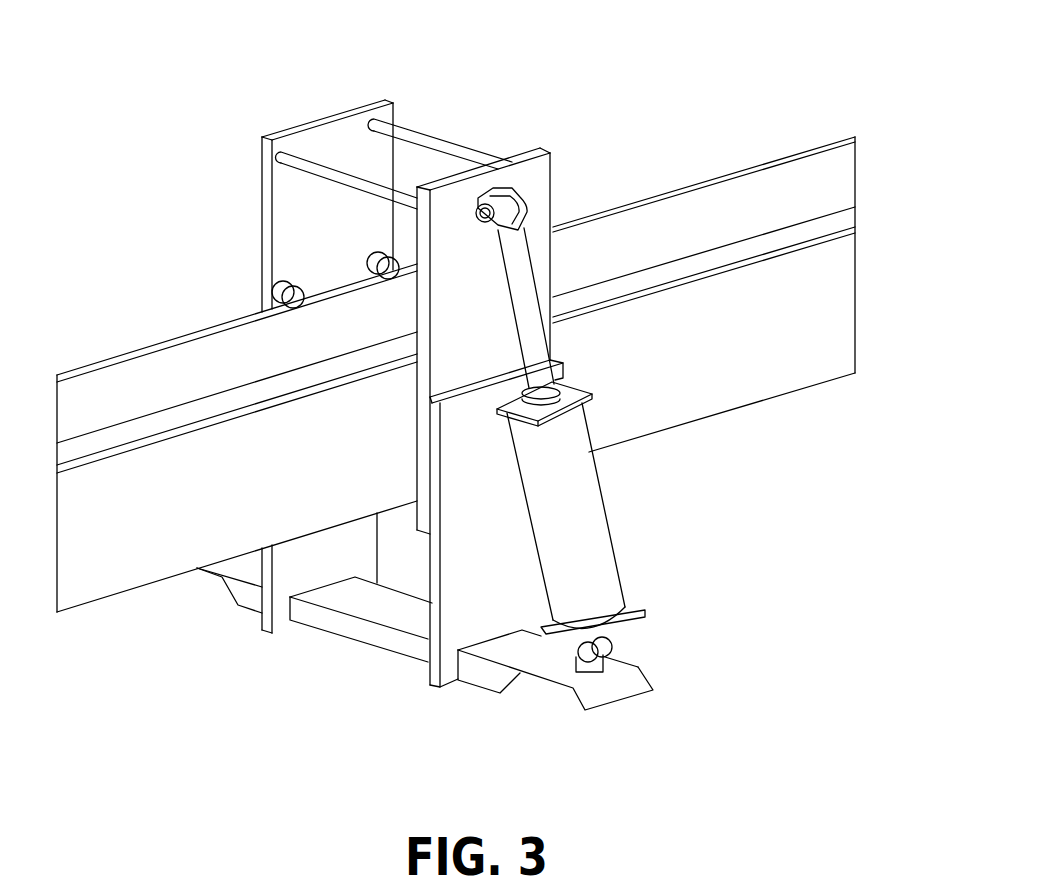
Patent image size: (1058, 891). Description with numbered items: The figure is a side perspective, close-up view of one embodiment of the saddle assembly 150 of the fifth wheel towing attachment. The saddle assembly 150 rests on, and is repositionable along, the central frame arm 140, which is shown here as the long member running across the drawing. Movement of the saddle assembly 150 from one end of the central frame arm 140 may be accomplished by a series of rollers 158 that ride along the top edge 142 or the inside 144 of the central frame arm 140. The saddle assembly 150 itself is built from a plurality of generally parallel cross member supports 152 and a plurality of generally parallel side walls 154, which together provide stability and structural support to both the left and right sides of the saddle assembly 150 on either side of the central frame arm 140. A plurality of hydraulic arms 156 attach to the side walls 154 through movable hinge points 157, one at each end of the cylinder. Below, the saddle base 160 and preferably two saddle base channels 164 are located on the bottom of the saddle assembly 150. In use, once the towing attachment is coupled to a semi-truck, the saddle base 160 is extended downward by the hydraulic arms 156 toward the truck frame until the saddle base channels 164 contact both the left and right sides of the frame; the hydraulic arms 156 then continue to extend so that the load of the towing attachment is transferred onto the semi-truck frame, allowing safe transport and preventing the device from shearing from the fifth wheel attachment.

The central frame arm 140 is at (816, 349).
The top edge 142 is at (168, 343).
The inside 144 is at (806, 233).
The saddle assembly 150 is at (467, 388).
The cross member supports 152 is at (413, 137).
The side walls 154 is at (443, 373).
The hydraulic arms 156 is at (590, 517).
The movable hinge points 157 is at (513, 190).
The rollers 158 is at (293, 300).
The saddle base 160 is at (377, 634).
The saddle base channels 164 is at (548, 675).